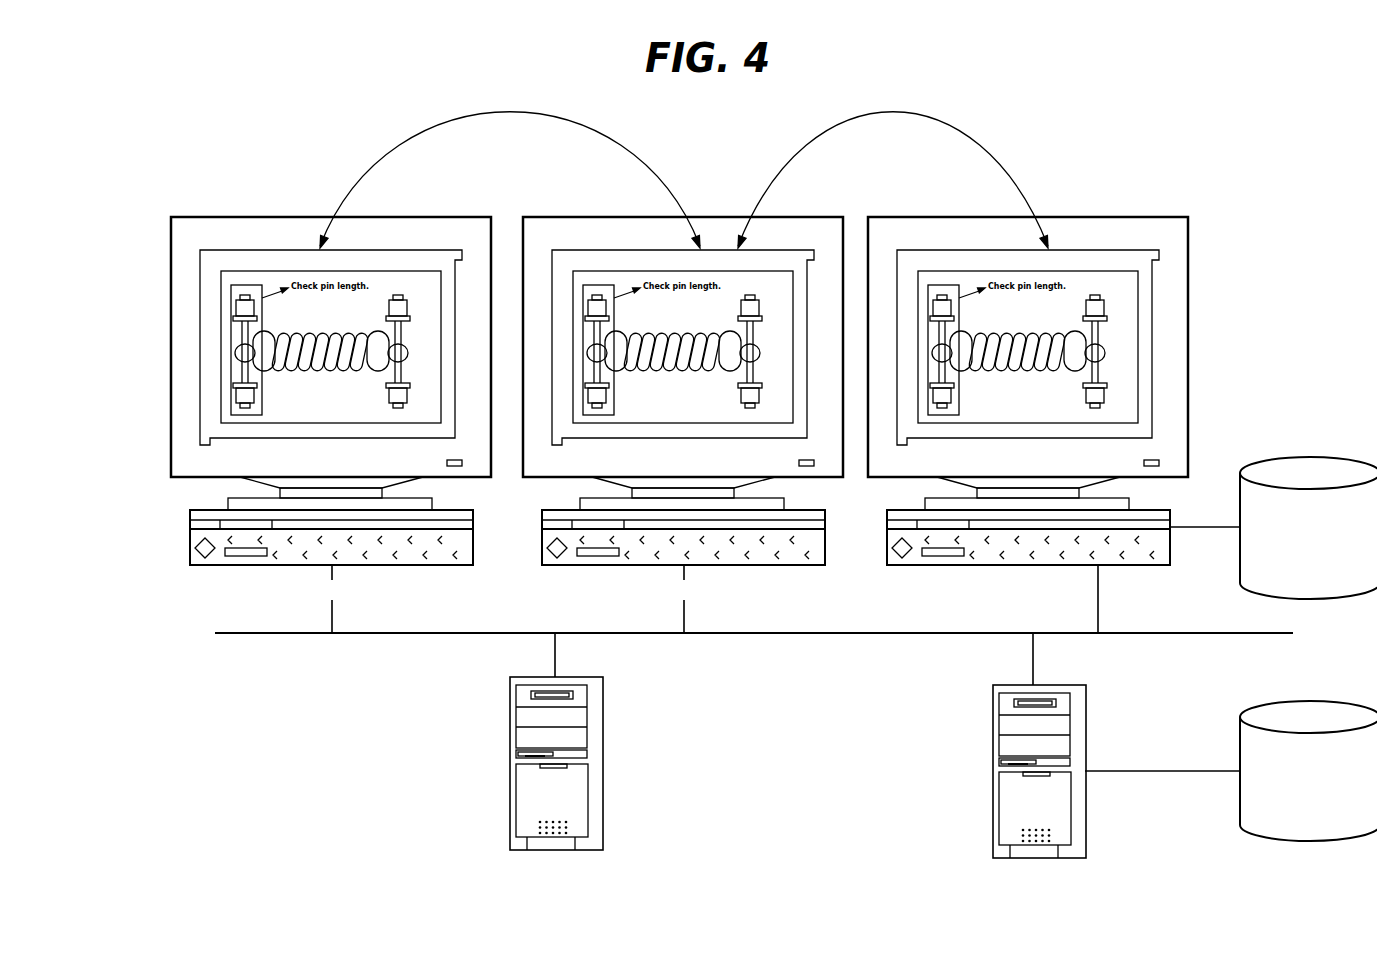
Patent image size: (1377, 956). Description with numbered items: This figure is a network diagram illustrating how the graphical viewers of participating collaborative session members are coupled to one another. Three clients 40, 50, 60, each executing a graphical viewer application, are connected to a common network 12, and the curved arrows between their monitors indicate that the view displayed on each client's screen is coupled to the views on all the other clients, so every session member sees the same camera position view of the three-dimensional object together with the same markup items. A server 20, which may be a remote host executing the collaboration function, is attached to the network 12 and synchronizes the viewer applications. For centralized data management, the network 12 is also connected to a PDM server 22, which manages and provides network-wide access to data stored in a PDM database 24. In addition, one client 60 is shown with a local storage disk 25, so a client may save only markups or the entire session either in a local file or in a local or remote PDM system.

The network 12 is at (913, 634).
The server 20 is at (510, 737).
The PDM server 22 is at (993, 771).
The PDM database 24 is at (1322, 810).
The local storage disk 25 is at (1321, 552).
The client 40 is at (388, 597).
The client 50 is at (741, 597).
The client 60 is at (1084, 597).